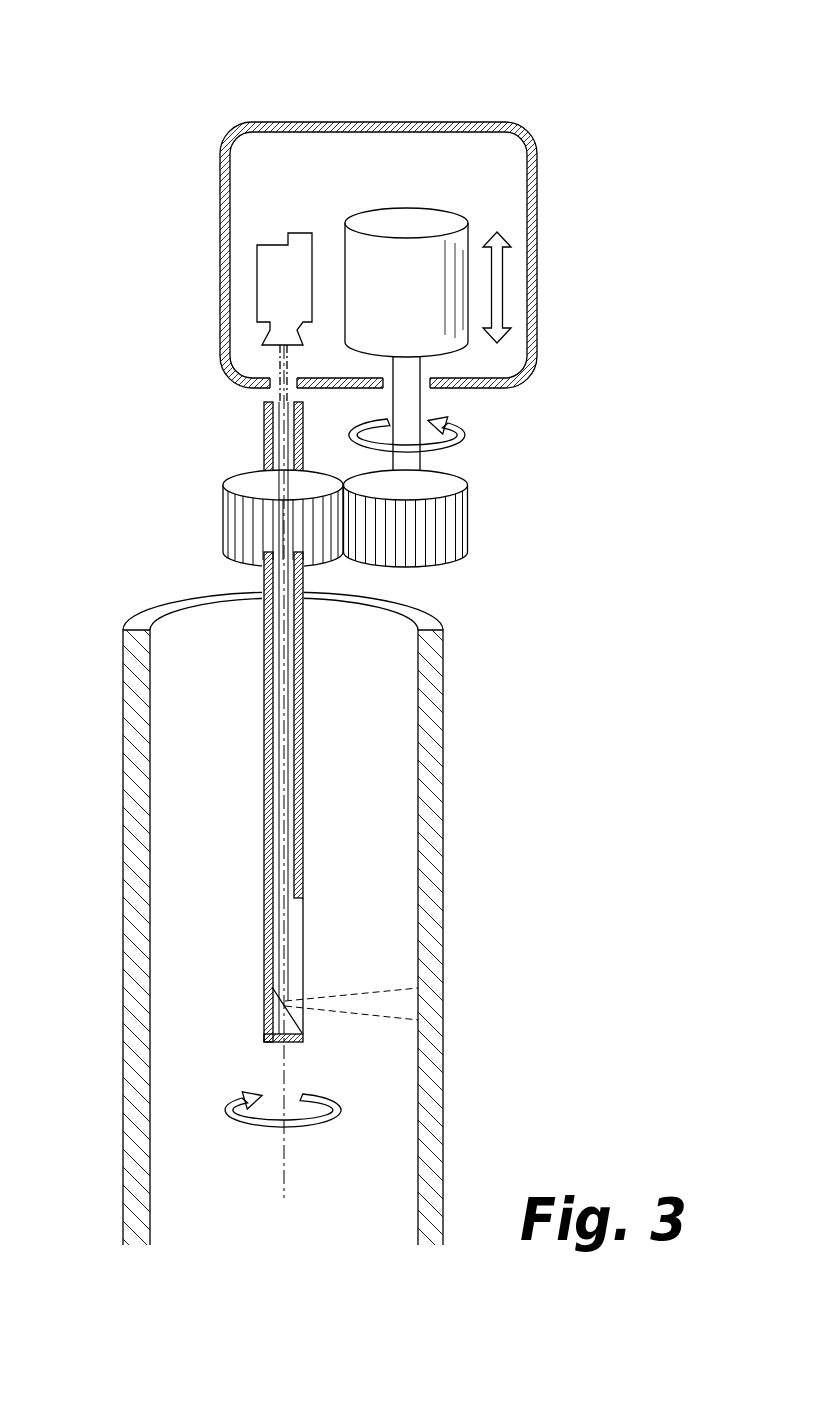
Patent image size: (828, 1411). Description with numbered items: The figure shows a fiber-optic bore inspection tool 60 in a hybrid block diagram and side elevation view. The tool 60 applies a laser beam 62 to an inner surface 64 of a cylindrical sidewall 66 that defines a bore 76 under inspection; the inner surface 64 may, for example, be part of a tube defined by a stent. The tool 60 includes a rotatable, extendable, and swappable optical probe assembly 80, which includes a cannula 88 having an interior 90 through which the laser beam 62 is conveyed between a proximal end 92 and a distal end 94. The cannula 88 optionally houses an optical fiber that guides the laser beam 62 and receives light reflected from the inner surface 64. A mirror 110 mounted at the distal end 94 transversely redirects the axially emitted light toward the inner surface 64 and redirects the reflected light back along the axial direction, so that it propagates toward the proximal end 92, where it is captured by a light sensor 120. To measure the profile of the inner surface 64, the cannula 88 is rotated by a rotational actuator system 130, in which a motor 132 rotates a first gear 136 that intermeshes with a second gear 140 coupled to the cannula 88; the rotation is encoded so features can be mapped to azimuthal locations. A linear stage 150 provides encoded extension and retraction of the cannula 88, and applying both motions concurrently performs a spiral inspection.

The fiber-optic bore inspection tool 60 is at (191, 60).
The rotational actuator system 130 is at (438, 185).
The motor 132 is at (450, 217).
The light sensor 120 is at (263, 284).
The linear stage 150 is at (517, 317).
The proximal end 92 is at (261, 402).
The second gear 140 is at (222, 520).
The first gear 136 is at (469, 521).
The bore 76 is at (212, 645).
The cylindrical sidewall 66 is at (152, 808).
The inner surface 64 is at (418, 875).
The cannula 88 is at (263, 878).
The optical probe assembly 80 is at (306, 767).
The interior 90 is at (274, 716).
The laser beam 62 is at (289, 933).
The mirror 110 is at (278, 1012).
The distal end 94 is at (296, 1042).